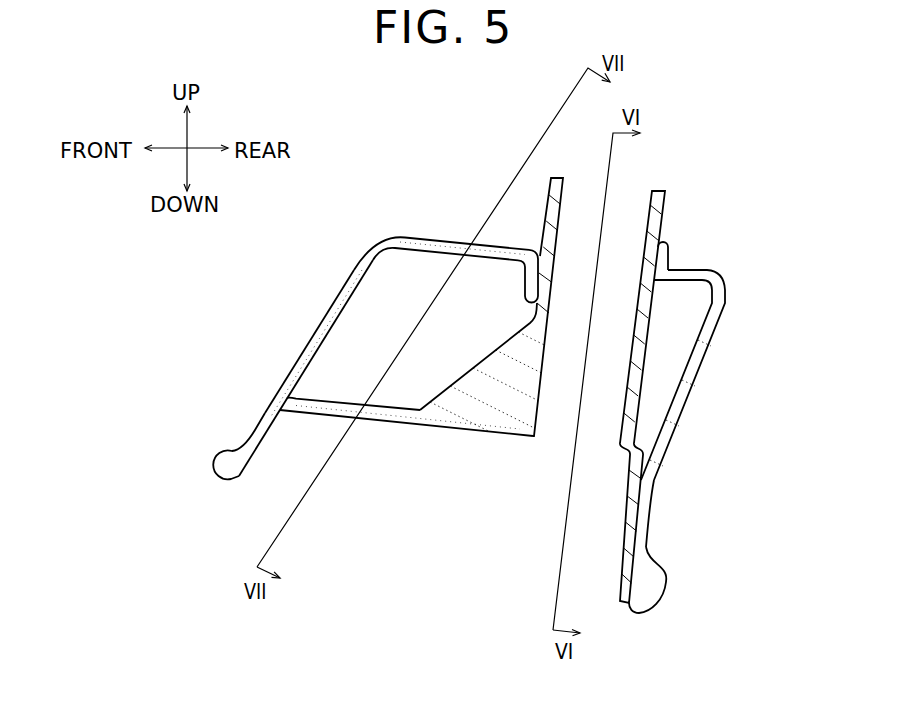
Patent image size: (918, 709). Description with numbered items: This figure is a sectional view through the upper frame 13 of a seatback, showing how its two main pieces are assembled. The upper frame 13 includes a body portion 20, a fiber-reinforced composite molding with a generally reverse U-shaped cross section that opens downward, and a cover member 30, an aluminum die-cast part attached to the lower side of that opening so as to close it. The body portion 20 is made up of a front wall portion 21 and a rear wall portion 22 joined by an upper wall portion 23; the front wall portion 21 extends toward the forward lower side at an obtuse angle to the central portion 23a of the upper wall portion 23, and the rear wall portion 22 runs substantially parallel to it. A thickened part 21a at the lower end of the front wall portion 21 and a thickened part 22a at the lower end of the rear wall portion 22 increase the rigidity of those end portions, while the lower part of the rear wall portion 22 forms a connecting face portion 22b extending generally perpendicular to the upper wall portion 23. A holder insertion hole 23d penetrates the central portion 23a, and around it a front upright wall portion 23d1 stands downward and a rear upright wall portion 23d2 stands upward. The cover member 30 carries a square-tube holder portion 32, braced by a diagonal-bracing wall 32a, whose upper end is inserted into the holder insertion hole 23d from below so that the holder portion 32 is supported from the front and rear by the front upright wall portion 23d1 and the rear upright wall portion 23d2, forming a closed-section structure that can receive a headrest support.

The upper frame 13 is at (369, 319).
The body portion 20 is at (512, 246).
The front wall portion 21 is at (314, 333).
The thickened part 21a is at (223, 478).
The upper wall portion 23 is at (430, 236).
The central portion 23a is at (457, 239).
The front upright wall portion 23d1 is at (523, 283).
The cover member 30 is at (382, 421).
The diagonal-bracing wall 32a is at (490, 356).
The holder portion 32 is at (663, 213).
The rear wall portion 22 is at (692, 393).
The holder insertion hole 23d is at (657, 262).
The rear upright wall portion 23d2 is at (668, 255).
The connecting face portion 22b is at (653, 507).
The thickened part 22a is at (649, 590).